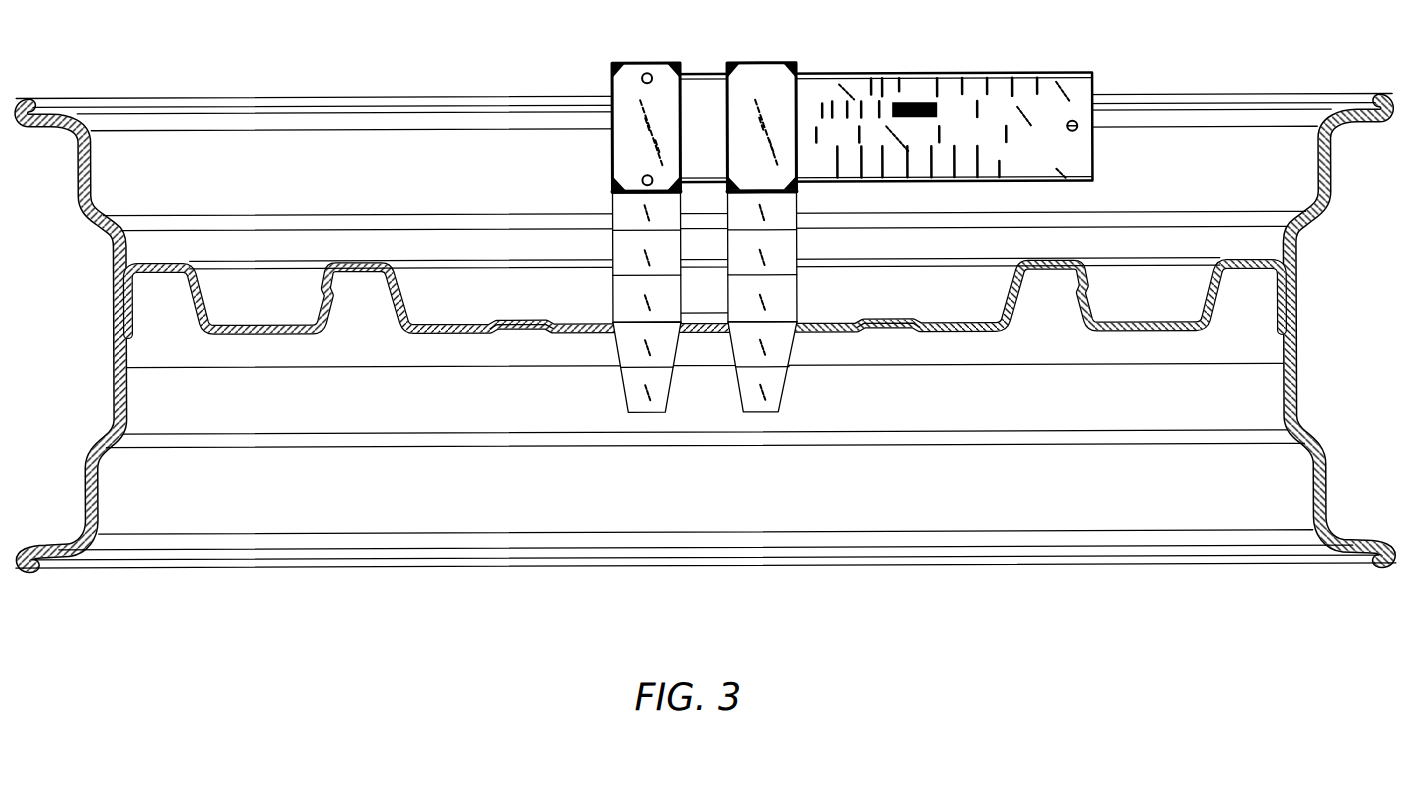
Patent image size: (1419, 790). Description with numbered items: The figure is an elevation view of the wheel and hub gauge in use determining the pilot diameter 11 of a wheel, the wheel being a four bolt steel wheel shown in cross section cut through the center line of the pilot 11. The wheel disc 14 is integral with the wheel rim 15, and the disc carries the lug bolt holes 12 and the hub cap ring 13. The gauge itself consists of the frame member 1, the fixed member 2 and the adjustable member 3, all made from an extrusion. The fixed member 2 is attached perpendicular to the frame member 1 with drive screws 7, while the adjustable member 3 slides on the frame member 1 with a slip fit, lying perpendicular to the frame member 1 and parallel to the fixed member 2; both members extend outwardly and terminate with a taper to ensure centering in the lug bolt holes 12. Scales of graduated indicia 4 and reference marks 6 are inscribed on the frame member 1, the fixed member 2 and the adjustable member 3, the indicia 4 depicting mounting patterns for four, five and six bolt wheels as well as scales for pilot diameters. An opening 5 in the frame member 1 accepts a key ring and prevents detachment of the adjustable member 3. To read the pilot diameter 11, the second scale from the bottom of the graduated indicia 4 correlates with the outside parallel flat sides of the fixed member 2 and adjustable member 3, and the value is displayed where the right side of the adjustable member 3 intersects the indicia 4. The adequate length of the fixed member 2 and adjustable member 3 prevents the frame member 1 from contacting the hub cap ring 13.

The frame member 1 is at (912, 75).
The fixed member 2 is at (666, 64).
The adjustable member 3 is at (783, 64).
The graduated indicia 4 is at (990, 94).
The opening 5 is at (1079, 122).
The reference marks 6 is at (616, 232).
The drive screws 7 is at (644, 73).
The pilot diameter 11 is at (707, 323).
The lug bolt holes 12 is at (520, 329).
The hub cap ring 13 is at (955, 303).
The wheel disc 14 is at (1205, 329).
The wheel rim 15 is at (1318, 446).